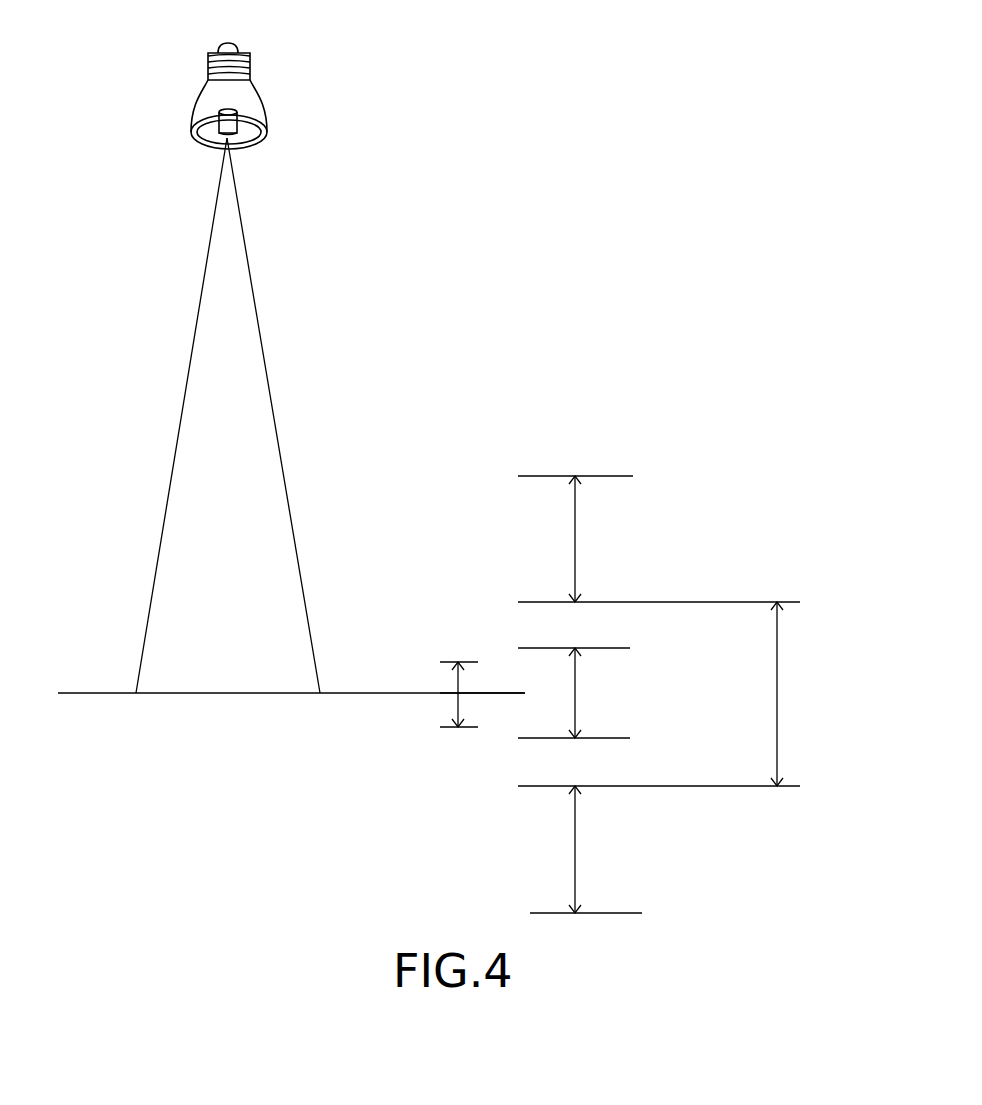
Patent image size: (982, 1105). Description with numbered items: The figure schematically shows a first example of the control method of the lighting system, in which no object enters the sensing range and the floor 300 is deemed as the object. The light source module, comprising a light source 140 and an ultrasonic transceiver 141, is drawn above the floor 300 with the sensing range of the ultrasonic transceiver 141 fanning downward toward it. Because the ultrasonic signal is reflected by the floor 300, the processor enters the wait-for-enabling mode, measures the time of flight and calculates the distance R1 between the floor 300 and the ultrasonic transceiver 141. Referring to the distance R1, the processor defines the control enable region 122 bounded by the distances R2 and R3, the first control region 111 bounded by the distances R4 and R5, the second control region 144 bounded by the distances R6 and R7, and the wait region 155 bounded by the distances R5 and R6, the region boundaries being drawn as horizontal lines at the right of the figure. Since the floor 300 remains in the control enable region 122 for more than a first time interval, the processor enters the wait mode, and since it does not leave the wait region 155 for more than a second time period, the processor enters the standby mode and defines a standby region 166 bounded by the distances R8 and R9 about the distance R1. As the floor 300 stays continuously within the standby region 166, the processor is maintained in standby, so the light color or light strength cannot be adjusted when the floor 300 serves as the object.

The light source 140 is at (238, 58).
The ultrasonic transceiver 141 is at (228, 110).
The floor 300 is at (120, 692).
The first control region 111 is at (576, 542).
The control enable region 122 is at (576, 700).
The second control region 144 is at (576, 856).
The wait region 155 is at (778, 666).
The standby region 166 is at (457, 705).
The distance between the object and the ultrasonic transceiver R1 is at (500, 694).
The distance to the upper limit of the control enable region R2 is at (593, 649).
The distance to the lower limit of the control enable region R3 is at (593, 739).
The distance to the upper limit of the first control region R4 is at (593, 479).
The distance to the lower limit of the first control region R5 is at (677, 608).
The distance to the upper limit of the second control region R6 is at (677, 789).
The distance to the lower limit of the second control region R7 is at (600, 914).
The distance to the upper limit of the standby region R8 is at (477, 663).
The distance to the lower limit of the standby region R9 is at (477, 728).